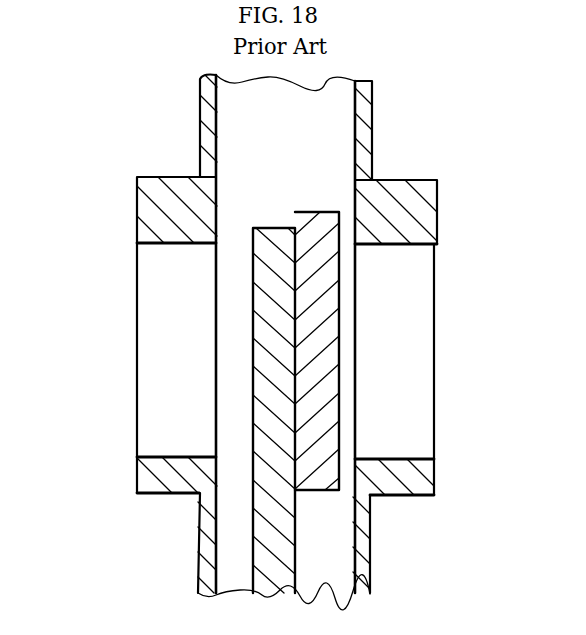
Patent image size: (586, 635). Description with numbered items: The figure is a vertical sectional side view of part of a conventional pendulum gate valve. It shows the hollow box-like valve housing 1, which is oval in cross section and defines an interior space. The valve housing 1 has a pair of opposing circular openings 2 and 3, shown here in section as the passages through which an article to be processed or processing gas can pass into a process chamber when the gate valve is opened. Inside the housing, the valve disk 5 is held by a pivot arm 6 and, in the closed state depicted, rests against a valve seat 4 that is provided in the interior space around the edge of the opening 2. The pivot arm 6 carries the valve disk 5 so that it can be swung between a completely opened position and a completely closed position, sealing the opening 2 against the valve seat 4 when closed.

The valve housing 1 is at (360, 575).
The circular opening 2 is at (417, 327).
The circular opening 3 is at (153, 332).
The valve seat 4 is at (352, 479).
The valve disk 5 is at (327, 218).
The pivot arm 6 is at (265, 537).